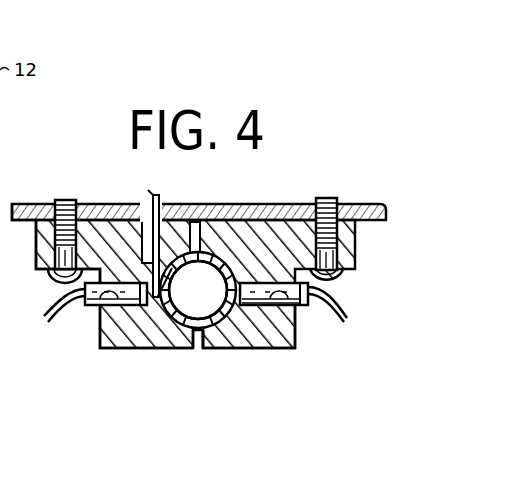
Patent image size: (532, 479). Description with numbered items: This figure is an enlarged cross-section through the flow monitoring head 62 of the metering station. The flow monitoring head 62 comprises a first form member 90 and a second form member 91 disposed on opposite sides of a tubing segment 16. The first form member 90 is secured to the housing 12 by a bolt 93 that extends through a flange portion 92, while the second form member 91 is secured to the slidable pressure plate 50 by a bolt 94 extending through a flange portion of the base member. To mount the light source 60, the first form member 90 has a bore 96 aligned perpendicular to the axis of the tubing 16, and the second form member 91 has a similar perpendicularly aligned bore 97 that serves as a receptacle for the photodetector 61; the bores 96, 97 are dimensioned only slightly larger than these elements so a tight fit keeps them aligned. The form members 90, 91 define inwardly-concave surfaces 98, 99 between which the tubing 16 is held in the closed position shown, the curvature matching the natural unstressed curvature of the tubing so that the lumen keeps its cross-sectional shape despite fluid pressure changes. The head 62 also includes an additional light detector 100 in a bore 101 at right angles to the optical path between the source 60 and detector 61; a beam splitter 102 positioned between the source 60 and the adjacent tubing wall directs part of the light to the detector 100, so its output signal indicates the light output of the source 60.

The housing 12 is at (31, 213).
The tubing segment 16 is at (198, 335).
The slidable pressure plate 50 is at (276, 205).
The light source 60 is at (86, 292).
The photodetector 61 is at (263, 294).
The flow monitoring head 62 is at (107, 355).
The first form member 90 is at (142, 349).
The second form member 91 is at (245, 352).
The flange portion 92 is at (40, 244).
The bolt 93 is at (65, 200).
The bolt 94 is at (334, 274).
The bore 96 is at (96, 306).
The bore 97 is at (305, 308).
The inwardly-concave surface 98 is at (174, 328).
The inwardly-concave surface 99 is at (216, 334).
The light detector 100 is at (156, 199).
The bore 101 is at (156, 240).
The beam splitter 102 is at (166, 292).